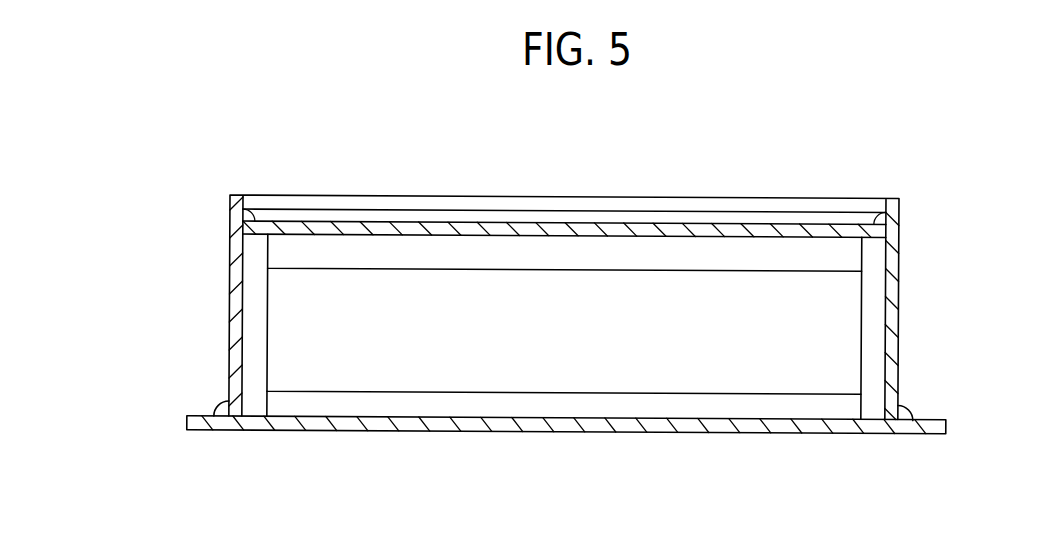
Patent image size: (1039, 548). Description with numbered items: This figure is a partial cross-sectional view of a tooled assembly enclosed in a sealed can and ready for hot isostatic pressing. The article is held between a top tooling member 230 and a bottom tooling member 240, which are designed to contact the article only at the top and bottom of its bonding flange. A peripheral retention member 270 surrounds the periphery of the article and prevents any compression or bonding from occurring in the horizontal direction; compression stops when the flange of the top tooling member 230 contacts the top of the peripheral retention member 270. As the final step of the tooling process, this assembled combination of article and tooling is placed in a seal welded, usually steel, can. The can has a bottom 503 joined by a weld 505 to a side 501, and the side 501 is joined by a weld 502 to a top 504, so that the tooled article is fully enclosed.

The side 501 is at (238, 275).
The weld 502 is at (535, 217).
The top 504 is at (323, 227).
The top tooling member 230 is at (862, 247).
The peripheral retention member 270 is at (862, 282).
The bottom tooling member 240 is at (862, 407).
The bottom 503 is at (932, 430).
The weld 505 is at (218, 410).